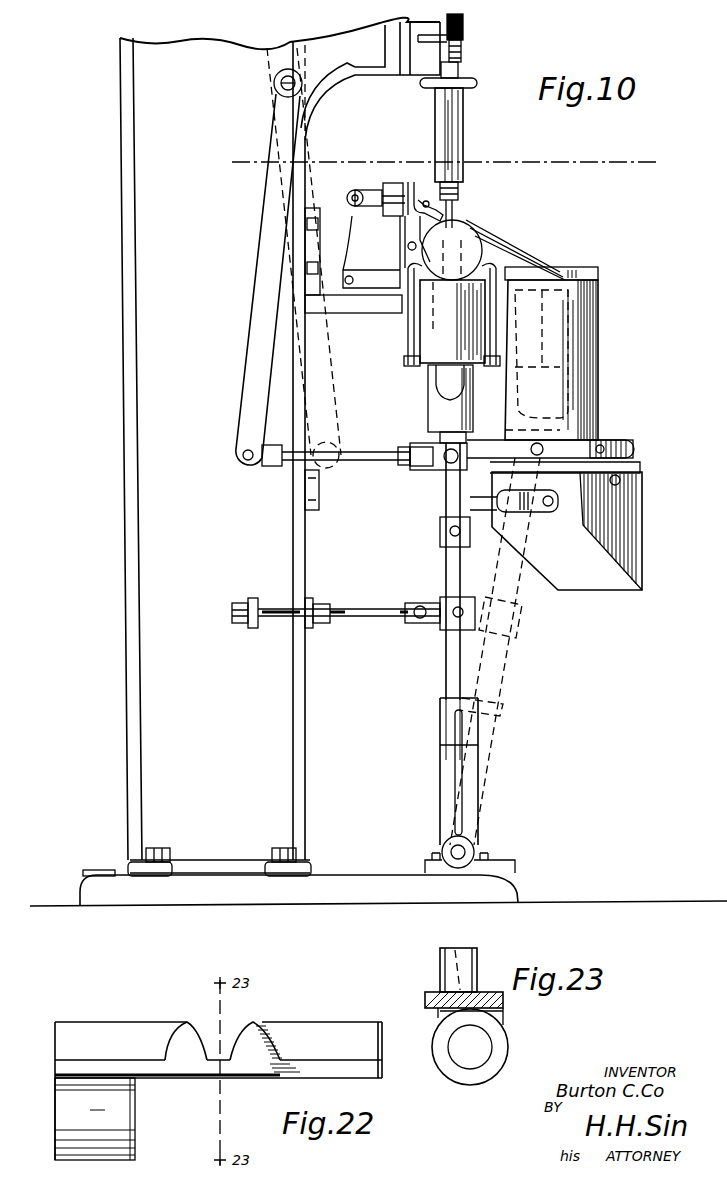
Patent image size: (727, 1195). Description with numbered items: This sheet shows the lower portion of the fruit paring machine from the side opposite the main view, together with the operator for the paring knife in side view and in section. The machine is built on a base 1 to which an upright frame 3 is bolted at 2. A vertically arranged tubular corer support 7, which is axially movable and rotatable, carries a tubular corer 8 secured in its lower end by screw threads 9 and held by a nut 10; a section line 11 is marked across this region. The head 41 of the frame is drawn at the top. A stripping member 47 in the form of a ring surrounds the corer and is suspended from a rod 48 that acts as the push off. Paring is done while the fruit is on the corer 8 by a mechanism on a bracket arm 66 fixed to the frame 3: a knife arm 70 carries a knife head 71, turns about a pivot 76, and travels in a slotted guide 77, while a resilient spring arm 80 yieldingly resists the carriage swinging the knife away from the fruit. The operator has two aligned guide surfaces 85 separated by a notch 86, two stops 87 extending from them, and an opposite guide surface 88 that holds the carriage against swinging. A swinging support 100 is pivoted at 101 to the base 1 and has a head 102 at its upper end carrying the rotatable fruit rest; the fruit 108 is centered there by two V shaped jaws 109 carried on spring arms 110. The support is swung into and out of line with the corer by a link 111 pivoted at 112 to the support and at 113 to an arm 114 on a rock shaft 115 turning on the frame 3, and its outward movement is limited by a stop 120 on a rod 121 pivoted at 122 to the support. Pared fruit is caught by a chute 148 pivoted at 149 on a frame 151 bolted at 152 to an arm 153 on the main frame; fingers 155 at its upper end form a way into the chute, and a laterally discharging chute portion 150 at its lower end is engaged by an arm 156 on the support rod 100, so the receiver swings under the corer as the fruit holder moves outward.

In FIG. 10, the base 1 is at (372, 906).
In FIG. 10, the bolting of frame to base 2 is at (135, 829).
In FIG. 10, the upright frame 3 is at (306, 797).
In FIG. 10, the tubular corer support 7 is at (464, 115).
In FIG. 10, the tubular corer 8 is at (454, 215).
In FIG. 10, the screw threads 9 is at (459, 196).
In FIG. 10, the nut 10 is at (463, 185).
In FIG. 10, the section line 11- 11 is at (660, 162).
In FIG. 10, the head 41 is at (345, 65).
In FIG. 10, the stripping member 47 is at (470, 78).
In FIG. 10, the rod 48 is at (466, 18).
In FIG. 10, the bracket arm 66 is at (346, 303).
In FIG. 10, the knife arm 70 is at (390, 185).
In FIG. 10, the knife head 71 is at (510, 240).
In FIG. 10, the pivot 76 is at (355, 190).
In FIG. 10, the slotted guide 77 is at (410, 190).
In FIG. 10, the resilient spring arm 80 is at (420, 330).
In FIG. 22, the guide surfaces 85 is at (108, 1022).
In FIG. 23, the guide surfaces 85 is at (456, 948).
In FIG. 22, the notch or recess 86 is at (76, 1060).
In FIG. 22, the projections or stops 87 is at (185, 1032).
In FIG. 23, the projections or stops 87 is at (440, 972).
In FIG. 22, the guide surface 88 is at (152, 1078).
In FIG. 23, the guide surface 88 is at (438, 1014).
In FIG. 10, the swinging support 100 is at (446, 656).
In FIG. 10, the pivot 101 is at (462, 846).
In FIG. 10, the head 102 is at (433, 412).
In FIG. 10, the fruit 108 is at (520, 250).
In FIG. 10, the V shaped jaws 109 is at (565, 265).
In FIG. 10, the spring arms 110 is at (405, 360).
In FIG. 10, the link 111 is at (382, 462).
In FIG. 10, the pivot 112 is at (440, 468).
In FIG. 10, the pivot 113 is at (248, 462).
In FIG. 10, the arm 114 is at (258, 306).
In FIG. 10, the rock shaft 115 is at (274, 83).
In FIG. 10, the stop 120 is at (253, 598).
In FIG. 10, the rod 121 is at (345, 617).
In FIG. 10, the pivotal connection 122 is at (420, 604).
In FIG. 10, the chute 148 is at (598, 371).
In FIG. 10, the pivots 149 is at (608, 440).
In FIG. 10, the laterally discharging chute portion 150 is at (642, 540).
In FIG. 10, the frame 151 is at (634, 454).
In FIG. 10, the bolt 152 is at (542, 449).
In FIG. 10, the arm 153 is at (392, 466).
In FIG. 10, the fingers 155 is at (596, 268).
In FIG. 10, the arm 156 is at (477, 512).